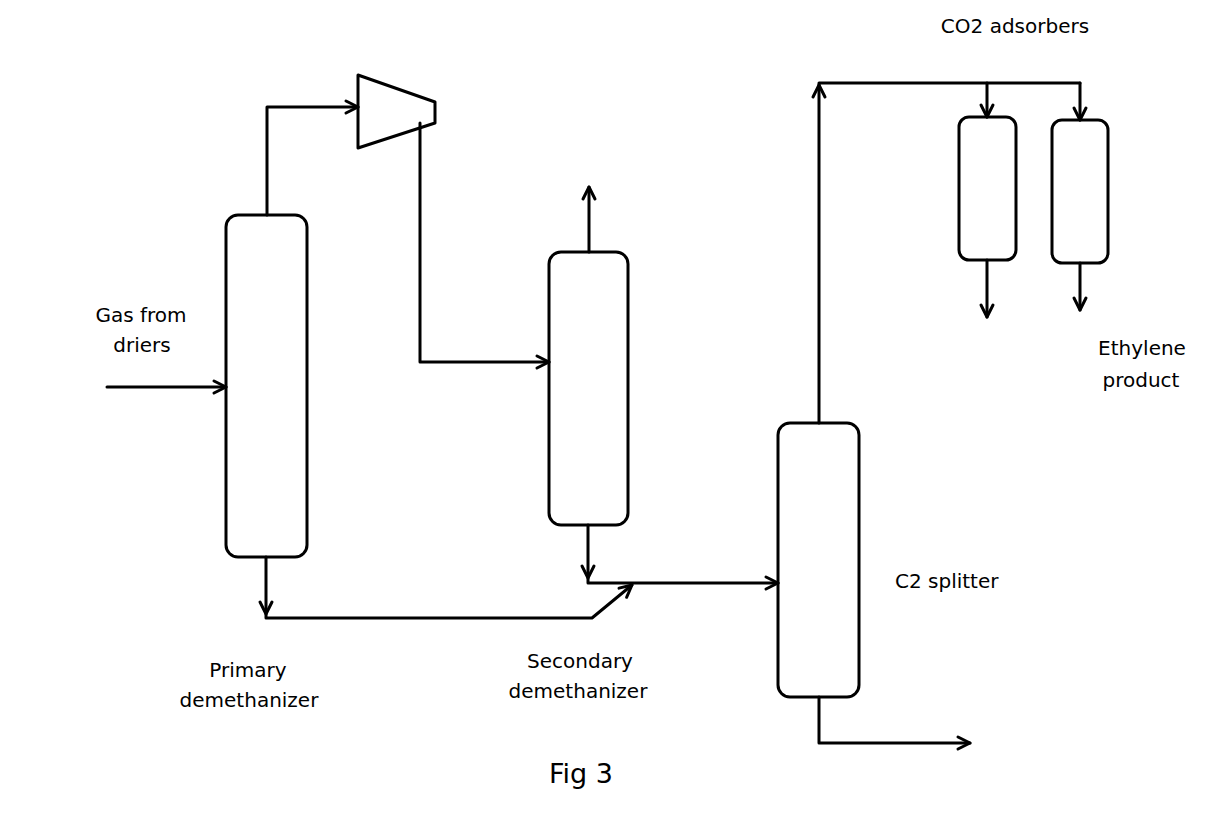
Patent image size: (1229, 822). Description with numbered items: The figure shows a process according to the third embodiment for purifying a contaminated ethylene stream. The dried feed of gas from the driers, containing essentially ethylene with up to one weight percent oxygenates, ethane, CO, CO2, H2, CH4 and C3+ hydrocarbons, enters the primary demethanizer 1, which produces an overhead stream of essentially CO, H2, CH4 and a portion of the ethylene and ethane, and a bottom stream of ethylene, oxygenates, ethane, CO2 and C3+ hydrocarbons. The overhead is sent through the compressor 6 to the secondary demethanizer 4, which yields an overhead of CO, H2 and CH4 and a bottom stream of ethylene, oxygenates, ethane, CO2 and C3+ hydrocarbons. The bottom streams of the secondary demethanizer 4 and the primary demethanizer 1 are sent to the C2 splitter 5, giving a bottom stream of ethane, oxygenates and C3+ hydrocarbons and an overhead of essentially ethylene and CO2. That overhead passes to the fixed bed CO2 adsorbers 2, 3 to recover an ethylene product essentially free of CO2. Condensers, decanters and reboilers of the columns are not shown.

The primary demethanizer 1 is at (266, 386).
The CO2 adsorber 2 is at (987, 188).
The CO2 adsorber 3 is at (1080, 191).
The secondary demethanizer 4 is at (588, 388).
The C2 splitter 5 is at (818, 560).
The compressor 6 is at (418, 110).